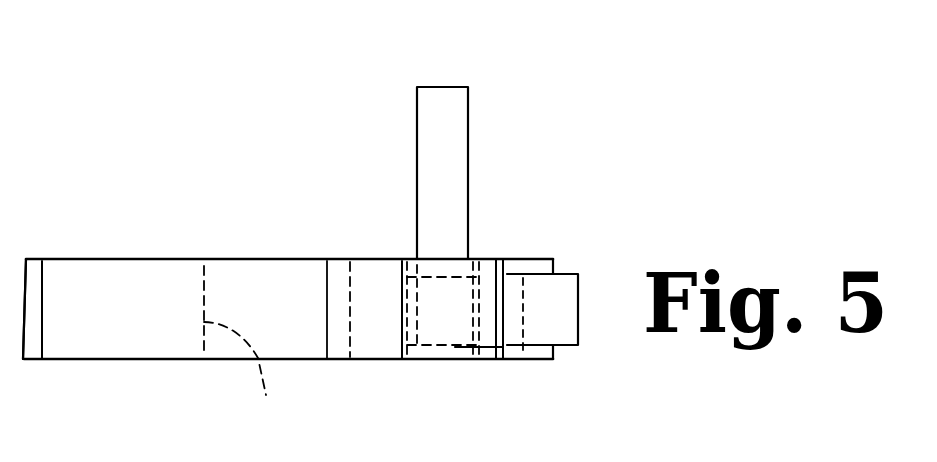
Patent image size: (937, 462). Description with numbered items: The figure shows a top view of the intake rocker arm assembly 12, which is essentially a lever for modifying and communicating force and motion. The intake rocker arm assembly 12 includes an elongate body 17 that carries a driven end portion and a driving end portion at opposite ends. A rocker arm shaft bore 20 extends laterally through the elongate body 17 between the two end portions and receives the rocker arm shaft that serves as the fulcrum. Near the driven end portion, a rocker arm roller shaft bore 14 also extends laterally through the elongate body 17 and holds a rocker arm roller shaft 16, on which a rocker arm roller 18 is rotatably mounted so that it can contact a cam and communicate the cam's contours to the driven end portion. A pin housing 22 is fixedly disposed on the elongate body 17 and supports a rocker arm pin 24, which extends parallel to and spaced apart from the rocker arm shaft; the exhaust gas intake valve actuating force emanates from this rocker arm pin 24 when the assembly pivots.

The intake rocker arm assembly 12 is at (333, 230).
The rocker arm roller shaft bore 14 is at (527, 272).
The rocker arm roller shaft 16 is at (487, 360).
The elongate body 17 is at (73, 258).
The rocker arm roller 18 is at (578, 288).
The rocker arm shaft bore 20 is at (245, 357).
The pin housing 22 is at (395, 256).
The rocker arm pin 24 is at (468, 97).